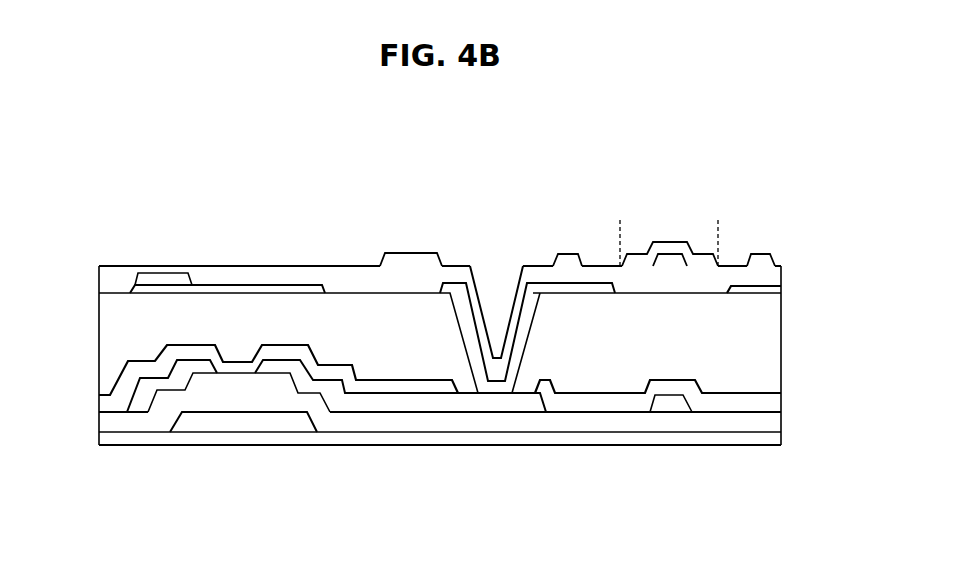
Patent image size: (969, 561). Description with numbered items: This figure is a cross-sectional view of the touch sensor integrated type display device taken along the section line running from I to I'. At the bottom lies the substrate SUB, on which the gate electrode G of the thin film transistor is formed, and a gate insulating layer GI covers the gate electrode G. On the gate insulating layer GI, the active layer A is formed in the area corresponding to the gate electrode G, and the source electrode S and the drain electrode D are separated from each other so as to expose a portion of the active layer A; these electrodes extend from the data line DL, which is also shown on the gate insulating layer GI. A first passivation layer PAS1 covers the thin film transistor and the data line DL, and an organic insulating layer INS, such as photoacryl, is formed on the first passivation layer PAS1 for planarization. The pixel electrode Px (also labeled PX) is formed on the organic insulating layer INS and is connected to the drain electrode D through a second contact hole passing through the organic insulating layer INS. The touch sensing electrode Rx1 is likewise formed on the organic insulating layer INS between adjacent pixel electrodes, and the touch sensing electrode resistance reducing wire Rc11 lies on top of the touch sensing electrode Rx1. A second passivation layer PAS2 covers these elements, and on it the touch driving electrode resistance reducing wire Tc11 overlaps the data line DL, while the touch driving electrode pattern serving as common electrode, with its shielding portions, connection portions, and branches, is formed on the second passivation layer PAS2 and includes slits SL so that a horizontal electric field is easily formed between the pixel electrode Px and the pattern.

The substrate SUB is at (767, 435).
The gate insulating layer GI is at (767, 416).
The gate electrode G is at (243, 418).
The active layer A is at (208, 378).
The source electrode S is at (182, 372).
The drain electrode D is at (310, 395).
The data line DL is at (672, 405).
The first passivation layer PAS1 is at (767, 398).
The organic insulating layer INS is at (767, 345).
The pixel electrode PX is at (767, 290).
The pixel electrode Px is at (527, 295).
The touch sensing electrode Rx1 is at (218, 293).
The touch sensing electrode resistance reducing wire Rc11 is at (165, 280).
The second passivation layer PAS2 is at (767, 270).
The slit SL is at (608, 258).
The touch driving electrode resistance reducing wire Tc11 is at (660, 250).
The section line end point I is at (87, 462).
The section line end point I' is at (780, 462).